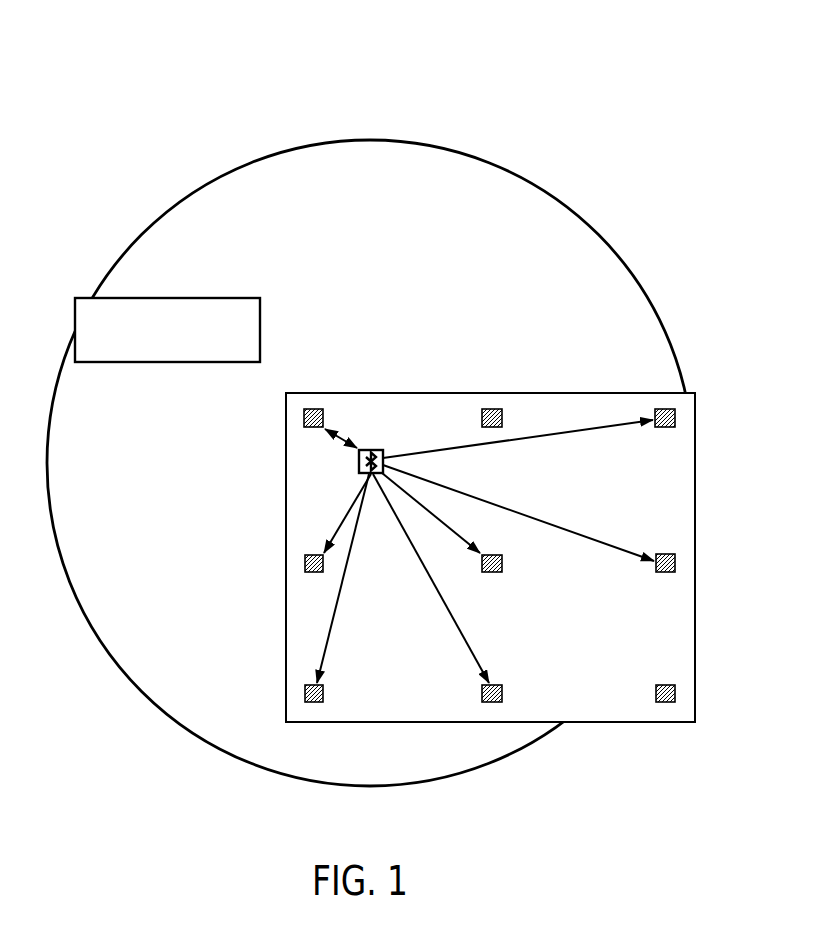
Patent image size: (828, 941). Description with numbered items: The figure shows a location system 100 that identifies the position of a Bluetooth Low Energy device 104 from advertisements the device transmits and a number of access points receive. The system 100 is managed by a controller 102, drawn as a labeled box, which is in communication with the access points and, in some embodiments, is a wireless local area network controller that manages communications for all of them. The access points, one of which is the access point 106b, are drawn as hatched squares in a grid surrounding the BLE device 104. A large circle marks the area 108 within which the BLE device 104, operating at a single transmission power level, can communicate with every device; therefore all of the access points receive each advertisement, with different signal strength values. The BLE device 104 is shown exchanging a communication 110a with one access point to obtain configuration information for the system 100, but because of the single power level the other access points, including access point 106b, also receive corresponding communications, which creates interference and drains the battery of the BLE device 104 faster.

The location system 100 is at (160, 55).
The controller circuit 102 is at (180, 298).
The BLE device 104 is at (379, 449).
The access point 106b is at (488, 408).
The area 108 is at (480, 158).
The communication 110a is at (346, 443).